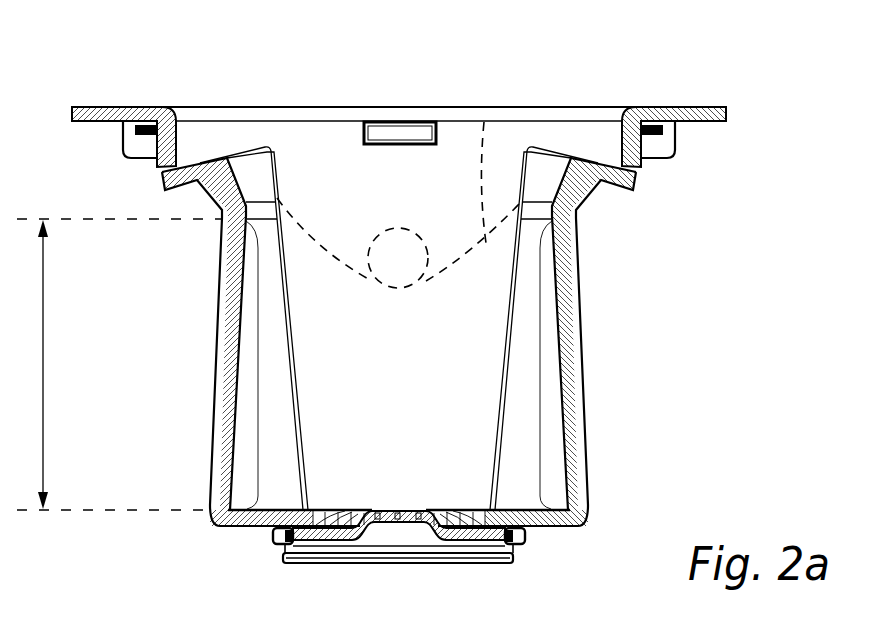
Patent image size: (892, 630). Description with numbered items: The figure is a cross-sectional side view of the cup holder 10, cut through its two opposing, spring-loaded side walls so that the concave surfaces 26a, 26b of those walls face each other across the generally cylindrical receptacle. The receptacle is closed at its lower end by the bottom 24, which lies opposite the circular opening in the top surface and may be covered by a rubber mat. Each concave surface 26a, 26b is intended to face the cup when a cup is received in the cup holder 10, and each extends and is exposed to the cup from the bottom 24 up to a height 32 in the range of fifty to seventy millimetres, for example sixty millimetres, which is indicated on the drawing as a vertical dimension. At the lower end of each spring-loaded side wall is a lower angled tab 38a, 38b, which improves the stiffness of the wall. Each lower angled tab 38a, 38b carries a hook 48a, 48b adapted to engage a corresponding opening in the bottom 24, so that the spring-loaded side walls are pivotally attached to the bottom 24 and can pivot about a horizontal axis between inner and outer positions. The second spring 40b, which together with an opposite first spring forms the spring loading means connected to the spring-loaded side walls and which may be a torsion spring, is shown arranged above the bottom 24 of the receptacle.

The cup holder 10 is at (241, 80).
The bottom 24 is at (369, 511).
The concave surface 26a is at (259, 370).
The concave surface 26b is at (537, 370).
The height 32 is at (43, 297).
The lower angled tab 38a is at (261, 517).
The lower angled tab 38b is at (537, 517).
The second spring 40b is at (485, 107).
The hook 48a is at (283, 547).
The hook 48b is at (515, 547).